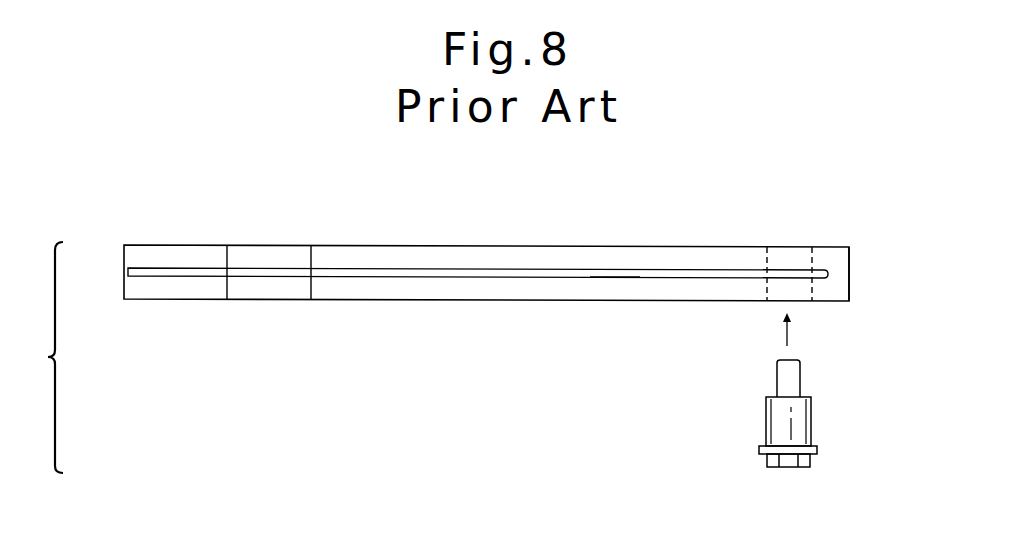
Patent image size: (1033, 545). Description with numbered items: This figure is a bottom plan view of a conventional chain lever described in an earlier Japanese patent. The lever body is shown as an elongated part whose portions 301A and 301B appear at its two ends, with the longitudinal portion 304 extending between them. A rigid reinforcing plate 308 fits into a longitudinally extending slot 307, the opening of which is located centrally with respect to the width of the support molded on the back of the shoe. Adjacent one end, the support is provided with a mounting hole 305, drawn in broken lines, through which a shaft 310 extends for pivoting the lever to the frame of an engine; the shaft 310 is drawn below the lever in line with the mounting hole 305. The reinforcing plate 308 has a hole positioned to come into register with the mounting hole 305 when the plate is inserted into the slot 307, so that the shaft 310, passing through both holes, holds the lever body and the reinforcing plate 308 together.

The first end portion of bar 301A is at (781, 233).
The second end portion of bar 301B is at (276, 234).
The bar body 304 is at (475, 256).
The mounting hole 305 is at (814, 261).
The slot 307 is at (606, 277).
The reinforcing plate 308 is at (565, 275).
The shaft 310 is at (826, 395).